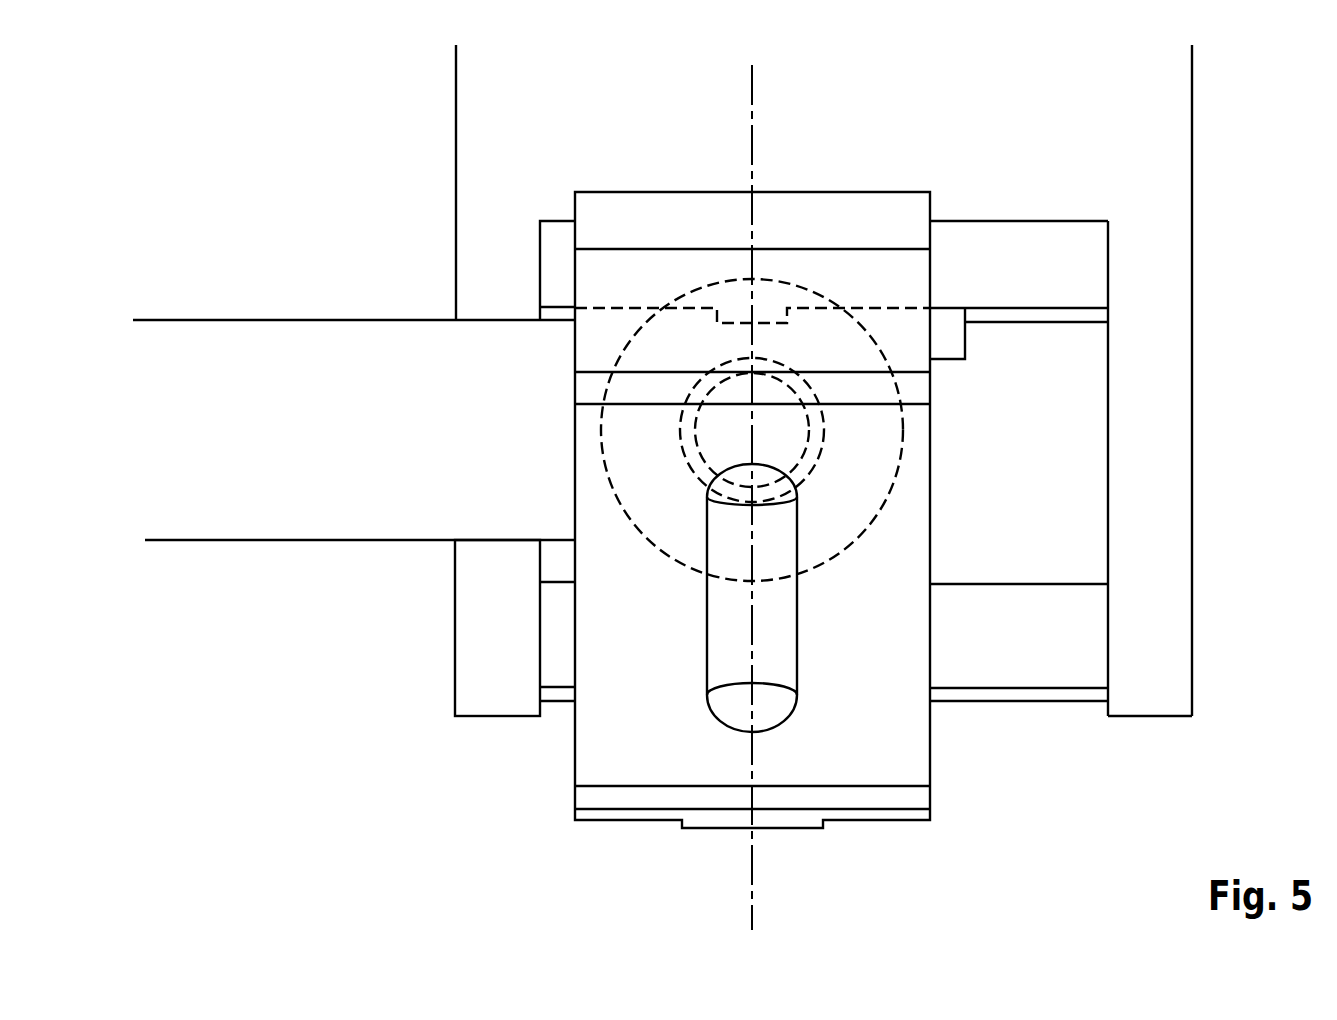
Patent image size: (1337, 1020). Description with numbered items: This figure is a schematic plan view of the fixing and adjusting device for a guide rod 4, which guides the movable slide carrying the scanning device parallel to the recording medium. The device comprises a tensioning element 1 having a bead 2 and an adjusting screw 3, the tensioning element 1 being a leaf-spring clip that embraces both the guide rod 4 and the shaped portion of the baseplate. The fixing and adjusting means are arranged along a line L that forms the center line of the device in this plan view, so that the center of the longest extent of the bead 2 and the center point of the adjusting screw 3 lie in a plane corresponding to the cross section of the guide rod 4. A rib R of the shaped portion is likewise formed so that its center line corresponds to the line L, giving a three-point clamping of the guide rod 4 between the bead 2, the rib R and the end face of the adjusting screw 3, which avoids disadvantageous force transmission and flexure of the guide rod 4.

The tensioning element 1 is at (615, 684).
The bead 2 is at (737, 711).
The adjusting screw 3 is at (832, 340).
The guide rod 4 is at (425, 497).
The line L is at (753, 142).
The rib R is at (740, 322).